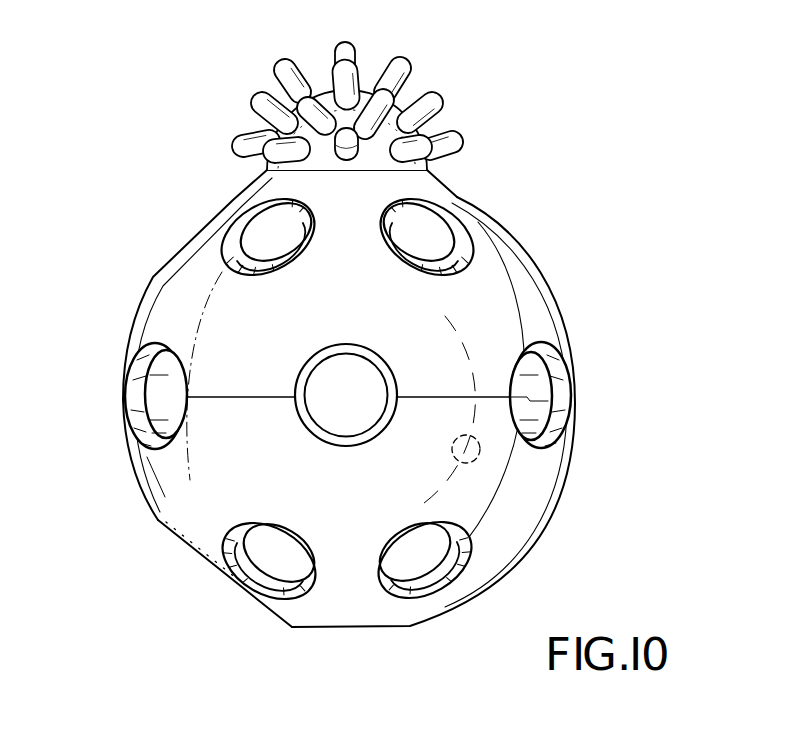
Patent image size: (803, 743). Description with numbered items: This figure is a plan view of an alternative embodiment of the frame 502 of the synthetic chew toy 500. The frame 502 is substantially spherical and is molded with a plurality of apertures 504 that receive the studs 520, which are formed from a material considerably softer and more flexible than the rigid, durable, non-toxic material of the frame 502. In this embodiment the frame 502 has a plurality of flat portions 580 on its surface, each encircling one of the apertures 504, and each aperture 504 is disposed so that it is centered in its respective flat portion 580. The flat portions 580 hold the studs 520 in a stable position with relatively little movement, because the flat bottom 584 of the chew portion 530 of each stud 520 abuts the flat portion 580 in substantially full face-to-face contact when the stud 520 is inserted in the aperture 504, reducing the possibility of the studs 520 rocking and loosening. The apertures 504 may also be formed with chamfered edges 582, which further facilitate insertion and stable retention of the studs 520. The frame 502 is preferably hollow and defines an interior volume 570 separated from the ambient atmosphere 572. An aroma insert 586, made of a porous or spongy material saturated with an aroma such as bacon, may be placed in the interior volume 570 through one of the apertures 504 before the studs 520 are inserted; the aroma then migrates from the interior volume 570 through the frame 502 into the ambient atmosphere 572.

The synthetic chew toy 500 is at (178, 234).
The frame 502 is at (500, 265).
The apertures 504 is at (128, 388).
The studs 520 is at (410, 46).
The chew portion 530 is at (300, 108).
The interior volume 570 is at (378, 406).
The ambient atmosphere 572 is at (679, 347).
The flat portions 580 is at (387, 172).
The chamfered edges 582 is at (126, 435).
The flat bottom 584 is at (267, 172).
The aroma insert 586 is at (481, 455).